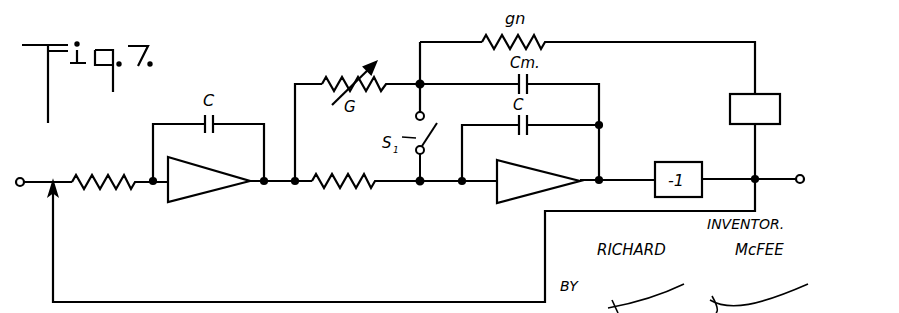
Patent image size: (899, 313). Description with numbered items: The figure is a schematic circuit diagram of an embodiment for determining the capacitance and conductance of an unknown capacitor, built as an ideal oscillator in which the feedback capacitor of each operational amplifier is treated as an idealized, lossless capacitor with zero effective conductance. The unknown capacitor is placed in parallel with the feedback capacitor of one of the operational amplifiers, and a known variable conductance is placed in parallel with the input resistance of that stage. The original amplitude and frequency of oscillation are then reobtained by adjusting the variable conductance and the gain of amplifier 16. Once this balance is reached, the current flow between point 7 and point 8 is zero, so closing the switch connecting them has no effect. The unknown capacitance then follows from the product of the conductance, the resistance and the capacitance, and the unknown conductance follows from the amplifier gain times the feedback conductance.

The point 7 is at (425, 80).
The point 8 is at (423, 189).
The amplifier 16 is at (773, 107).